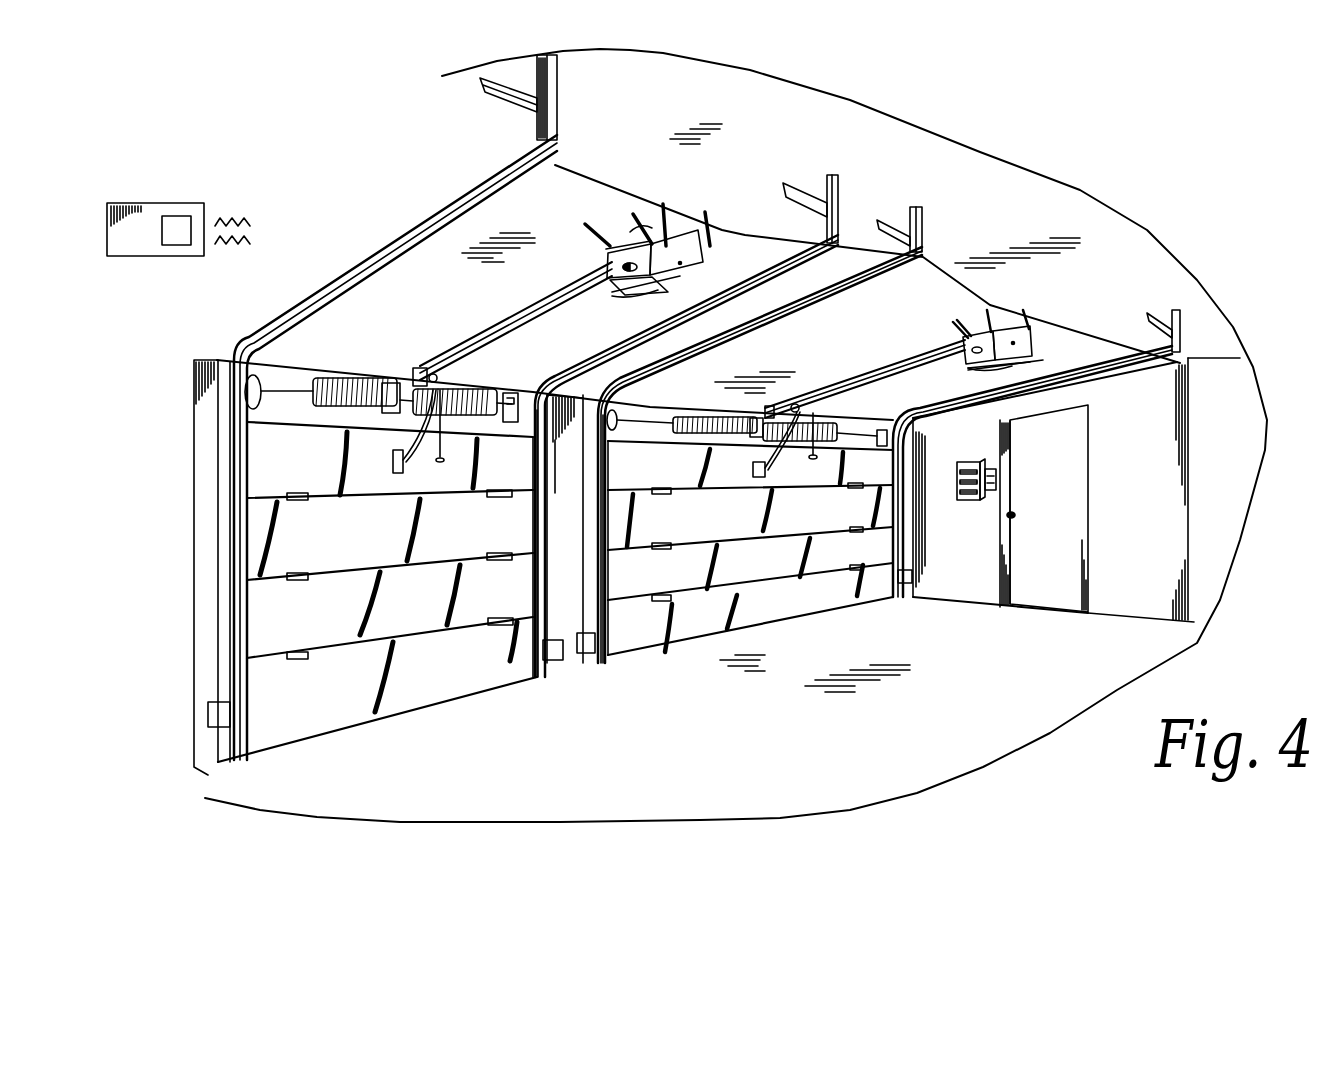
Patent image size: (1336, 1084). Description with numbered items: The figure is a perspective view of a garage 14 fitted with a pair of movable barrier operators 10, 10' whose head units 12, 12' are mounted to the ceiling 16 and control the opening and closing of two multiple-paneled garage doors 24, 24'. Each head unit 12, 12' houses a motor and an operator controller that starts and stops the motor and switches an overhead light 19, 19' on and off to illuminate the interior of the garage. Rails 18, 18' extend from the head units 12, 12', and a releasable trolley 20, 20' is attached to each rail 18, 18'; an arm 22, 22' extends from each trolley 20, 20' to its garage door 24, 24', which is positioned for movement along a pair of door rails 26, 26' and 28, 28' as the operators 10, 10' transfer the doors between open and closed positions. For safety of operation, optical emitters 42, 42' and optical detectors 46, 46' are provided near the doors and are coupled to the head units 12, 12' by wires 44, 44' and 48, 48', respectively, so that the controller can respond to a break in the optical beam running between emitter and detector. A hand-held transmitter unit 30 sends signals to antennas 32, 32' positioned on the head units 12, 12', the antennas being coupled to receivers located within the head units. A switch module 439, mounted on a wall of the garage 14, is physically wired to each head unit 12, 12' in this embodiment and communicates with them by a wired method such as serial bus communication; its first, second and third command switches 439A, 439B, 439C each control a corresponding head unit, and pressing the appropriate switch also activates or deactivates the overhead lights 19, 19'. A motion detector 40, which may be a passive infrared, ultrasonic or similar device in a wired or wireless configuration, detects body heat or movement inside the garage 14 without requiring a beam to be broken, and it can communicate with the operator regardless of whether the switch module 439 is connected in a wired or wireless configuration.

The movable barrier operator 10 is at (865, 365).
The movable barrier operator 10' is at (516, 321).
The head unit 12 is at (997, 314).
The head unit 12' is at (648, 233).
The garage 14 is at (645, 567).
The ceiling 16 is at (736, 435).
The rail 18 is at (747, 390).
The rail 18' is at (381, 365).
The overhead light 19 is at (965, 379).
The overhead light 19' is at (664, 343).
The releasable trolley 20 is at (865, 380).
The releasable trolley 20' is at (512, 324).
The arm 22 is at (787, 465).
The arm 22' is at (438, 461).
The garage door 24 is at (848, 554).
The garage door 24' is at (377, 596).
The door rail 26 is at (1141, 316).
The door rail 26' is at (395, 407).
The door rail 28 is at (885, 421).
The door rail 28' is at (686, 426).
The hand-held transmitter unit 30 is at (178, 191).
The antenna 32 is at (1023, 355).
The antenna 32' is at (704, 294).
The motion detector 40 is at (1036, 508).
The optical emitter 42 is at (934, 604).
The optical emitter 42' is at (579, 678).
The wire 44 is at (863, 472).
The wire 44' is at (510, 543).
The optical detector 46 is at (623, 663).
The optical detector 46' is at (256, 752).
The wire 48 is at (628, 539).
The wire 48' is at (279, 562).
The switch module 439 is at (970, 509).
The first command switch 439A is at (1021, 454).
The second command switch 439B is at (966, 446).
The third command switch 439C is at (1016, 523).